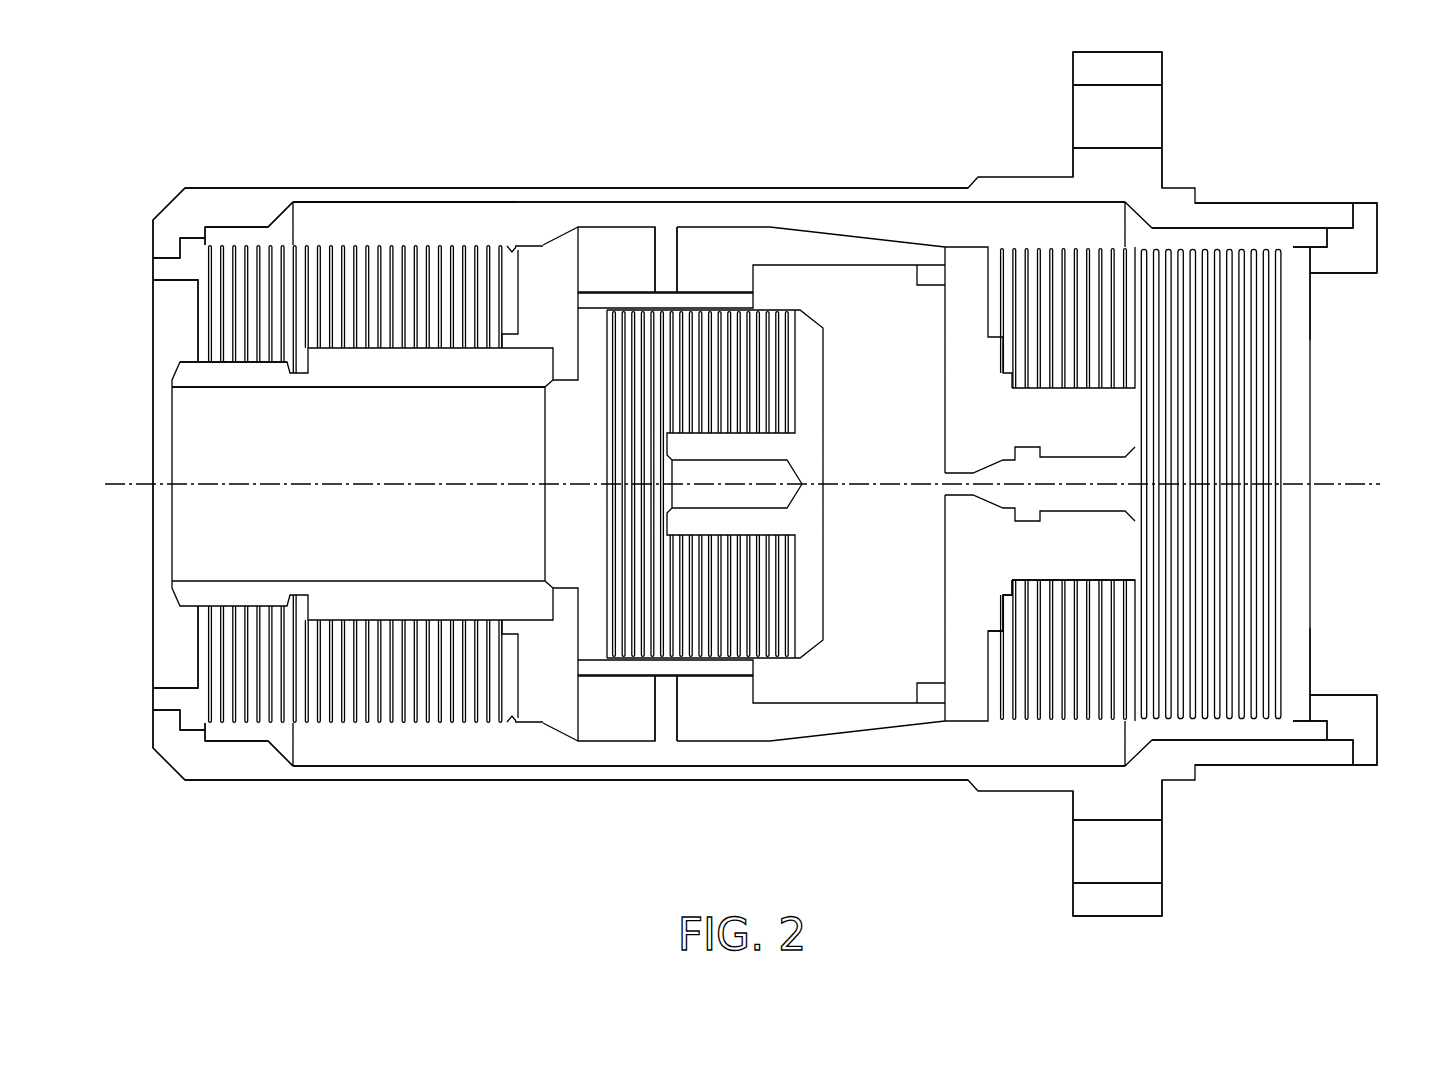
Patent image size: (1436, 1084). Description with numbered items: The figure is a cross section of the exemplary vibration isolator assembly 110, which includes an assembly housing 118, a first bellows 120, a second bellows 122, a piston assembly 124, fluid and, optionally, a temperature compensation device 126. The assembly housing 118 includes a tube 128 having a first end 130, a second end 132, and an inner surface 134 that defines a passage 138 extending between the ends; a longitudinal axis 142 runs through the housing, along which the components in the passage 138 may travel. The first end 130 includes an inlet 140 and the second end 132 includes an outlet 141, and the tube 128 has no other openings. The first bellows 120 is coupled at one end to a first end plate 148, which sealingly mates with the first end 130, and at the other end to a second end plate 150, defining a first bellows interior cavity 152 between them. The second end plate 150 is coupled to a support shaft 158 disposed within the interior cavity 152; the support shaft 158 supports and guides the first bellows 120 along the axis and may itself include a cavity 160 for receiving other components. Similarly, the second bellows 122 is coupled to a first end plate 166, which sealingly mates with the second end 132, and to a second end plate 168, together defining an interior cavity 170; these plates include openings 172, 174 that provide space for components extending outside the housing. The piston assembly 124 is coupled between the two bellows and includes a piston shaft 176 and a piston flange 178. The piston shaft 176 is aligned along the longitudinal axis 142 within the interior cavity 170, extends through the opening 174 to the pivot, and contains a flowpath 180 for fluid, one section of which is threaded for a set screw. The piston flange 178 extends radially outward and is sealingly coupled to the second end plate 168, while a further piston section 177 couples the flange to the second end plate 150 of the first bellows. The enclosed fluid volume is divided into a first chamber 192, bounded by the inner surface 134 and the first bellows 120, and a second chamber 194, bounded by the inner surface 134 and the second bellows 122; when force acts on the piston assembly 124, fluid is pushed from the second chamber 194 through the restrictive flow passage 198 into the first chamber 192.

The isolator assembly 110 is at (606, 140).
The assembly housing 118 is at (231, 190).
The first bellows 120 is at (330, 240).
The second bellows 122 is at (1045, 232).
The piston assembly 124 is at (1055, 562).
The temperature compensation device 126 is at (640, 666).
The tube 128 is at (443, 772).
The first end 130 is at (150, 235).
The second end 132 is at (1322, 206).
The inner surface 134 is at (391, 215).
The passage 138 is at (862, 222).
The inlet 140 is at (178, 338).
The outlet 141 is at (1332, 375).
The longitudinal axis 142 is at (325, 488).
The first end plate 148 is at (178, 275).
The second end plate 150 is at (545, 245).
The first bellows interior cavity 152 is at (254, 341).
The support shaft 158 is at (238, 378).
The cavity 160 is at (403, 451).
The first end plate 166 is at (1340, 263).
The second end plate 168 is at (960, 251).
The interior cavity 170 is at (1106, 344).
The opening 172 is at (1312, 588).
The opening 174 is at (992, 620).
The piston shaft 176 is at (1126, 555).
The piston section 177 is at (708, 240).
The piston flange 178 is at (950, 724).
The flowpath 180 is at (1077, 460).
The first chamber 192 is at (386, 759).
The second chamber 194 is at (1056, 754).
The restrictive flow passage 198 is at (659, 758).